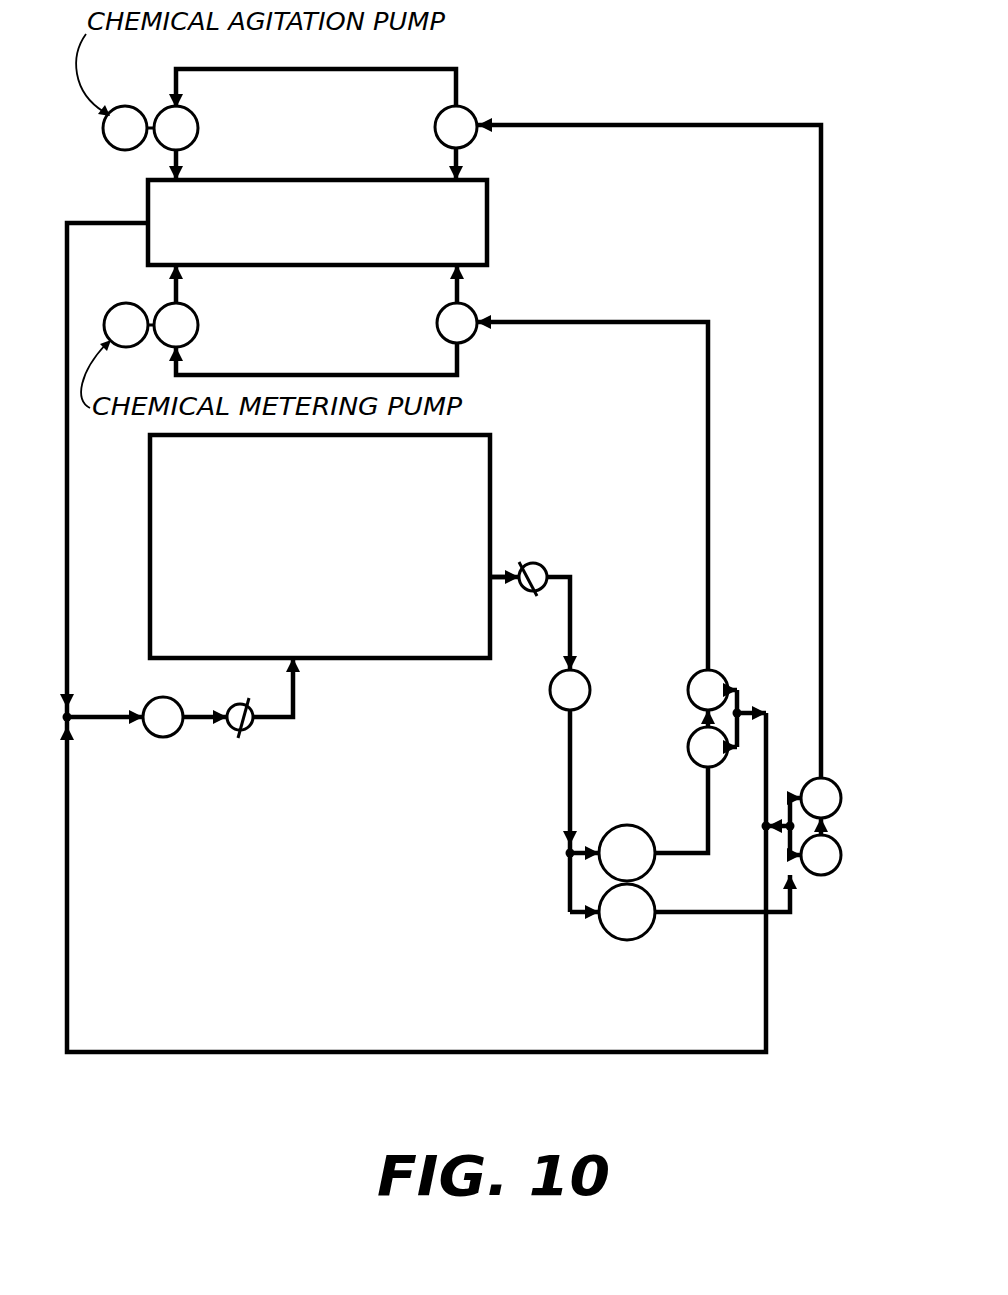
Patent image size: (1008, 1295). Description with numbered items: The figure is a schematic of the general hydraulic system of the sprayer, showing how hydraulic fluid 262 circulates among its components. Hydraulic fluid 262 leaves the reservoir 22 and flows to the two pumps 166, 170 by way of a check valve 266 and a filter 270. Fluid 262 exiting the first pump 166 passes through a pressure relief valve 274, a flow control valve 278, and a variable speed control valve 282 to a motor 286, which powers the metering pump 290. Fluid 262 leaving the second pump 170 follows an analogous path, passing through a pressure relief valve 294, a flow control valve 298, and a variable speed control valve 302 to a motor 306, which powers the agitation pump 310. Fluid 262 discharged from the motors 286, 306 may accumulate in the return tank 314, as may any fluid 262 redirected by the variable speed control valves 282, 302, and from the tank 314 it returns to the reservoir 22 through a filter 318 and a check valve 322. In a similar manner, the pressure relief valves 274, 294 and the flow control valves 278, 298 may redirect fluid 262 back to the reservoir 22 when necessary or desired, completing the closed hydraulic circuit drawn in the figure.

The reservoir 22 is at (490, 495).
The pump 166 is at (650, 827).
The pump 170 is at (640, 936).
The hydraulic fluid 262 is at (497, 572).
The check valve 266 is at (545, 566).
The filter 270 is at (555, 704).
The pressure relief valve 274 is at (688, 755).
The flow control valve 278 is at (722, 676).
The variable speed control valve 282 is at (468, 306).
The motor 286 is at (193, 310).
The metering pump 290 is at (142, 305).
The pressure relief valve 294 is at (895, 885).
The flow control valve 298 is at (885, 752).
The variable speed control valve 302 is at (468, 110).
The motor 306 is at (193, 115).
The agitation pump 310 is at (125, 150).
The tank 314 is at (487, 210).
The filter 318 is at (158, 738).
The check valve 322 is at (250, 728).